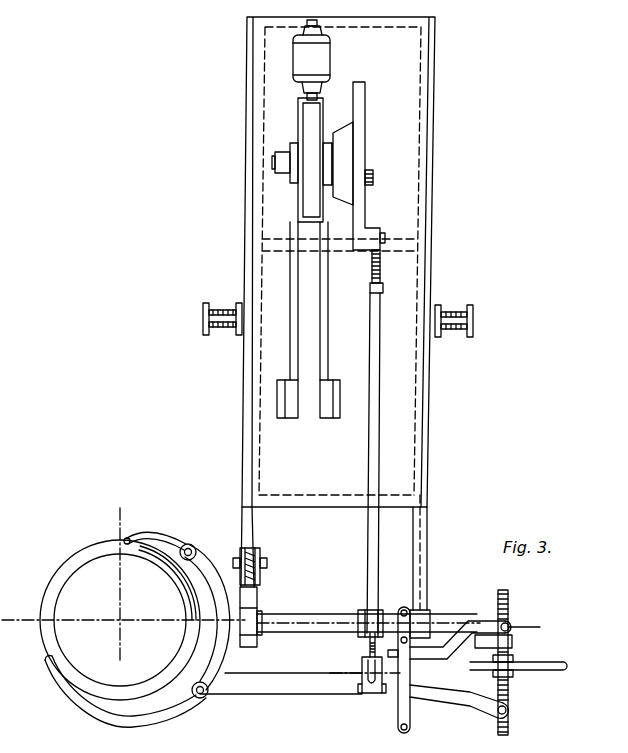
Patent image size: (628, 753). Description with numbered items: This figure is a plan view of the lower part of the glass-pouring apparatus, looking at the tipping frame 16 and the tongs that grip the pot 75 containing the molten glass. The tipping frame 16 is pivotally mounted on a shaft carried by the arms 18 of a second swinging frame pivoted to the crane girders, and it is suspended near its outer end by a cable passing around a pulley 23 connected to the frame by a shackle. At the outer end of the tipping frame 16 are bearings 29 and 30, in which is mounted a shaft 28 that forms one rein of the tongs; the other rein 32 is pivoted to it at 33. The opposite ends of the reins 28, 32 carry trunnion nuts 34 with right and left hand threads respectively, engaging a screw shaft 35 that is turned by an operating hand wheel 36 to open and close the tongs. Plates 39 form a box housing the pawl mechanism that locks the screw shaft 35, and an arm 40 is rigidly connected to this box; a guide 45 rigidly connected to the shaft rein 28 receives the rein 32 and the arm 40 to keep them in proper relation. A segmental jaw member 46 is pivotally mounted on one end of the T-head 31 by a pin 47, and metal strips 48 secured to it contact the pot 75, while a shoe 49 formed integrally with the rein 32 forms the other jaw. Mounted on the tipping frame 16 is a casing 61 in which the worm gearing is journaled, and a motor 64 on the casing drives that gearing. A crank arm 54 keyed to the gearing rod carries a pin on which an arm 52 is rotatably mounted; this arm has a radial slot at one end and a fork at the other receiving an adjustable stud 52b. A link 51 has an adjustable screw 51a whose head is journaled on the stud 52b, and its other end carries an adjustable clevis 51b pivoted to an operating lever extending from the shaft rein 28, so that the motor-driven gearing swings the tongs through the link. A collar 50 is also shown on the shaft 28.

The tipping frame 16 is at (338, 313).
The arms 18 is at (203, 330).
The pulley 23 is at (262, 556).
The shaft 28 is at (305, 618).
The bearing 29 is at (257, 640).
The bearing 30 is at (427, 613).
The T-head 31 is at (206, 573).
The rein 32 is at (300, 686).
The pivot 33 is at (203, 694).
The trunnion nuts 34 is at (508, 625).
The screw shaft 35 is at (508, 693).
The operating hand wheel 36 is at (567, 666).
The plates 39 is at (512, 642).
The arm 40 is at (475, 649).
The guide 45 is at (398, 697).
The segmental jaw member 46 is at (147, 548).
The pin 47 is at (188, 544).
The metal strips 48 is at (190, 570).
The shoe 49 is at (65, 678).
The collar 50 is at (378, 612).
The link 51 is at (375, 418).
The adjustable screw 51a is at (395, 271).
The adjustable clevis 51b is at (365, 668).
The arm 52 is at (357, 165).
The adjustable stud 52b is at (385, 238).
The crank arm 54 is at (345, 138).
The casing 61 is at (303, 128).
The motor 64 is at (321, 68).
The pot 75 is at (49, 598).